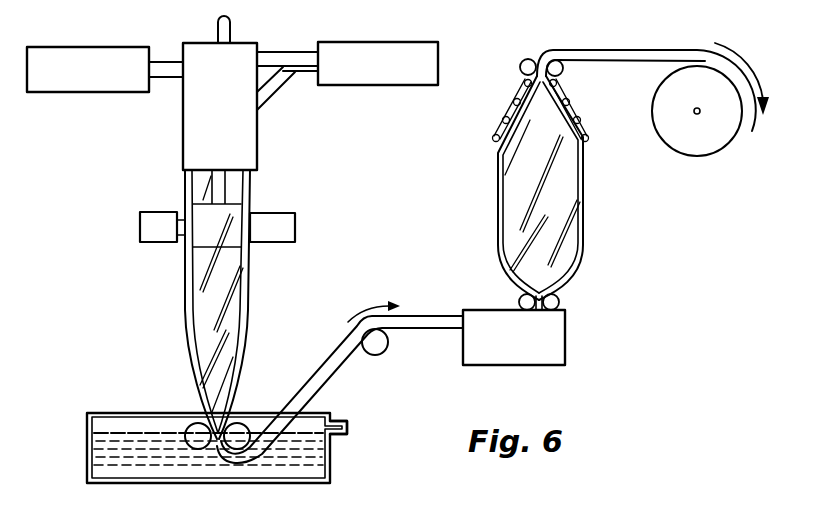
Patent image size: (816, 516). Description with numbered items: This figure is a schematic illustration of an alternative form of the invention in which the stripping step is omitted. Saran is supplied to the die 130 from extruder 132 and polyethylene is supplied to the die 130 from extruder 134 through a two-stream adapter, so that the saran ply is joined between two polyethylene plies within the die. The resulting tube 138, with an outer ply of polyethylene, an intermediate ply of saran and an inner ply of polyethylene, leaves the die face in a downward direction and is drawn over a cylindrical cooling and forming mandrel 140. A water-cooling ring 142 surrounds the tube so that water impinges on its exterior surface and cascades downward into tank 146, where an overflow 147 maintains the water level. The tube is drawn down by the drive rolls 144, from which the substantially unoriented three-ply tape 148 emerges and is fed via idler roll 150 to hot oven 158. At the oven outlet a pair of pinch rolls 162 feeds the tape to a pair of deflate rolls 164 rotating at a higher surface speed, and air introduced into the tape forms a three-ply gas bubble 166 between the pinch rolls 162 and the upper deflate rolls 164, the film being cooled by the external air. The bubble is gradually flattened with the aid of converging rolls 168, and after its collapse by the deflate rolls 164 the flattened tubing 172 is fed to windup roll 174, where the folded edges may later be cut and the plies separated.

The nozzle housing 130 is at (246, 47).
The extruder 132 is at (60, 48).
The extruder 134 is at (352, 43).
The tube 138 is at (250, 201).
The cylindrical cooling and forming mandrel 140 is at (195, 212).
The water-cooling ring 142 is at (296, 232).
The drive rolls 144 is at (199, 450).
The tank 146 is at (86, 482).
The overflow 147 is at (346, 437).
The three-ply tape 148 is at (330, 352).
The idler roll 150 is at (386, 353).
The hot oven 158 is at (566, 351).
The pinch rolls 162 is at (562, 301).
The deflate rolls 164 is at (535, 60).
The gas bubble 166 is at (584, 225).
The converging rolls 168 is at (587, 138).
The flattened tubing 172 is at (605, 50).
The windup roll 174 is at (712, 151).